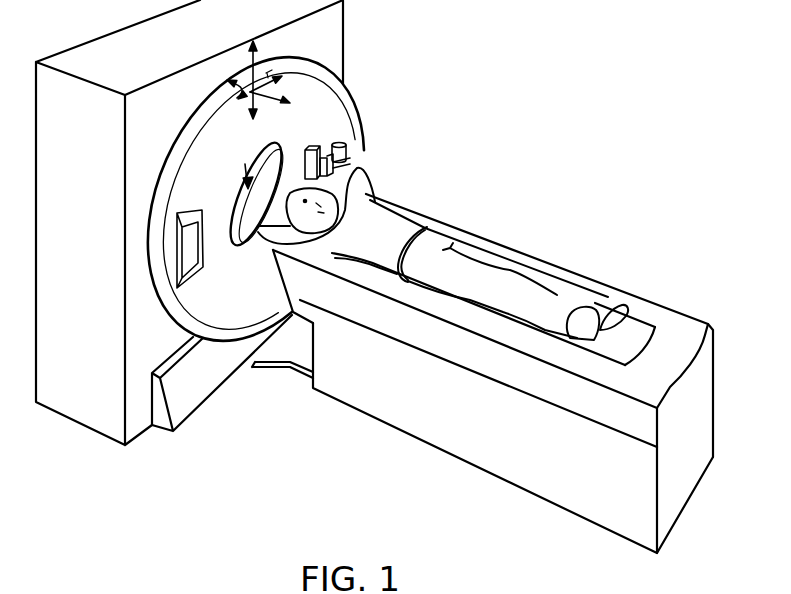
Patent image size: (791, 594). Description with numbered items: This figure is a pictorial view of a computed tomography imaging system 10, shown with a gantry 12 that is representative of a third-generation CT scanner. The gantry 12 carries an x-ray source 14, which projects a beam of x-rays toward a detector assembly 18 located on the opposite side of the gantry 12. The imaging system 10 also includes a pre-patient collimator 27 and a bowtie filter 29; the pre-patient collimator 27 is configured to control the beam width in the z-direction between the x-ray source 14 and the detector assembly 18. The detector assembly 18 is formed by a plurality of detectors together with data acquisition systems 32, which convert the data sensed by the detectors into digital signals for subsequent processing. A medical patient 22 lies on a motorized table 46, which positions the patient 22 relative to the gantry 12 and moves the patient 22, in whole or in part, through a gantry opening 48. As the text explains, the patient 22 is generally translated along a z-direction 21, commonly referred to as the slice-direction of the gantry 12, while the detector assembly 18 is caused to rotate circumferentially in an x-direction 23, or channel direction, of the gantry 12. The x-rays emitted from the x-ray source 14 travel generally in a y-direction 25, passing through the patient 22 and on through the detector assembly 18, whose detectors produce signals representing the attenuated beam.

The computed tomography (CT) imaging system 10 is at (528, 141).
The gantry 12 is at (315, 112).
The x-ray source 14 is at (346, 158).
The detector assembly 18 is at (192, 276).
The z-direction 21 is at (262, 90).
The medical patient 22 is at (404, 222).
The x-direction 23 is at (268, 73).
The y-direction 25 is at (242, 100).
The pre-patient collimator 27 is at (329, 190).
The bowtie filter 29 is at (316, 148).
The data acquisition systems (DAS) 32 is at (198, 213).
The motorized table 46 is at (463, 445).
The gantry opening 48 is at (245, 164).